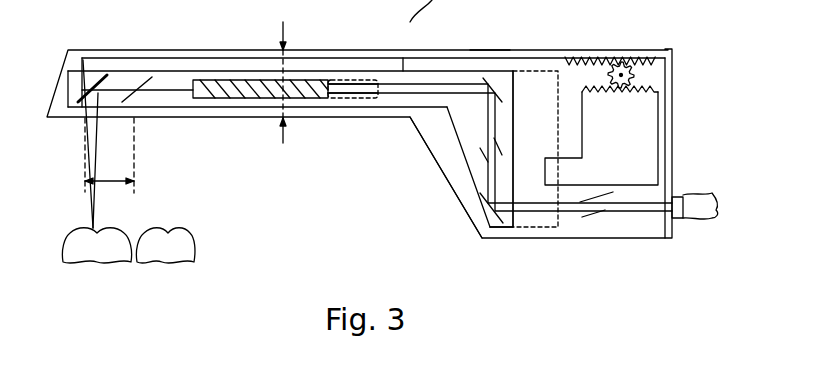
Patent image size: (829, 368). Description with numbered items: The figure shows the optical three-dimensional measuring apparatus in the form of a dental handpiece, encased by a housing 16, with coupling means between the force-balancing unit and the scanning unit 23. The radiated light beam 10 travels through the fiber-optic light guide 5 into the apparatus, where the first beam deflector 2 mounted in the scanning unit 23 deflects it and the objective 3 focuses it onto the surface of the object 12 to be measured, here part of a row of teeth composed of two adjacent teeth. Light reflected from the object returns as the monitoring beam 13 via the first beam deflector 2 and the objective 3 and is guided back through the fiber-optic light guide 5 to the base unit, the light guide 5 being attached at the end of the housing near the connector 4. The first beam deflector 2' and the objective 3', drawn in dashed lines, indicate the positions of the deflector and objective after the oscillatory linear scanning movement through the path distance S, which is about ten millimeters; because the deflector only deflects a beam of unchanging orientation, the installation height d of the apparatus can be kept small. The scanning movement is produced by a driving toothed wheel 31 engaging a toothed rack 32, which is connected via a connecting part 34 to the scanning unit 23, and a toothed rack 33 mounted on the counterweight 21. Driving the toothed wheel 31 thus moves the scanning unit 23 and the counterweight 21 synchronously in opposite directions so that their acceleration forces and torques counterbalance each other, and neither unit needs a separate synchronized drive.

The first beam deflector 2 is at (92, 57).
The first beam deflector (displaced position) 2' is at (145, 55).
The objective 3 is at (260, 54).
The objective (displaced position) 3' is at (353, 58).
The connector 4 is at (677, 212).
The fiber-optic light guide 5 is at (697, 202).
The radiated light beam 10 is at (523, 203).
The object to be measured 12 is at (98, 240).
The monitoring beam 13 is at (533, 215).
The housing 16 is at (462, 205).
The counterweight 21 is at (655, 130).
The scanning unit 23 is at (387, 107).
The driving toothed wheel 31 is at (637, 75).
The toothed rack 32 is at (655, 58).
The toothed rack 33 is at (657, 87).
The connecting part 34 is at (488, 50).
The path distance S is at (112, 182).
The installation height d is at (277, 87).